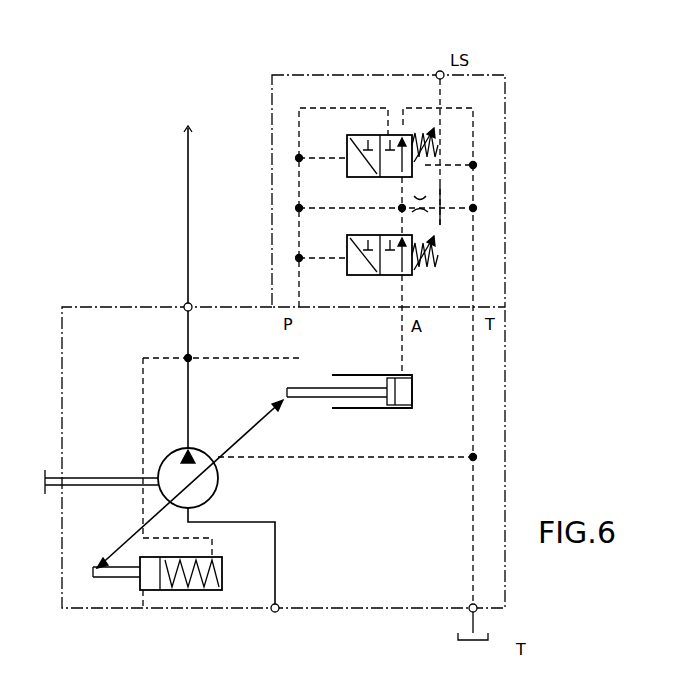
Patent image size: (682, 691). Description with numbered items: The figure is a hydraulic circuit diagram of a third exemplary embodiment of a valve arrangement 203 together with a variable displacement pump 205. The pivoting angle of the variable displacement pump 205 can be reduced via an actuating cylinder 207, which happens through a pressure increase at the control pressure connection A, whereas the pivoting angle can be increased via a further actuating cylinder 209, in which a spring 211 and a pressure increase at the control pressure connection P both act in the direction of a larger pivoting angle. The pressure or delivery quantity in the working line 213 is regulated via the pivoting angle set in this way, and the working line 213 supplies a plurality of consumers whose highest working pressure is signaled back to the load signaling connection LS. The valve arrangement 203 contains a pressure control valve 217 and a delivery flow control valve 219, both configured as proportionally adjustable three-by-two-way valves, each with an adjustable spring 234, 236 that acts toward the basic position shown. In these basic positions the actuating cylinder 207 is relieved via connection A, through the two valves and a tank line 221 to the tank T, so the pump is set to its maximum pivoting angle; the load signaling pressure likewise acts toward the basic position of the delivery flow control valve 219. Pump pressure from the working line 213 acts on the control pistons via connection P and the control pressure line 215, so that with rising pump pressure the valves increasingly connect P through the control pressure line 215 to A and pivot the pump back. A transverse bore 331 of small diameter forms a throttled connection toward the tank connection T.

The valve arrangement 203 is at (272, 107).
The variable displacement pump 205 is at (100, 307).
The actuating cylinder 207 is at (368, 375).
The further actuating cylinder 209 is at (145, 610).
The spring 211 is at (195, 582).
The working line 213 is at (190, 168).
The control pressure line 215 is at (299, 186).
The pressure control valve 217 is at (362, 131).
The delivery flow control valve 219 is at (428, 277).
The tank line 221 is at (443, 197).
The adjustable spring 234 is at (438, 253).
The adjustable spring 236 is at (437, 150).
The transverse bore 331 is at (423, 199).